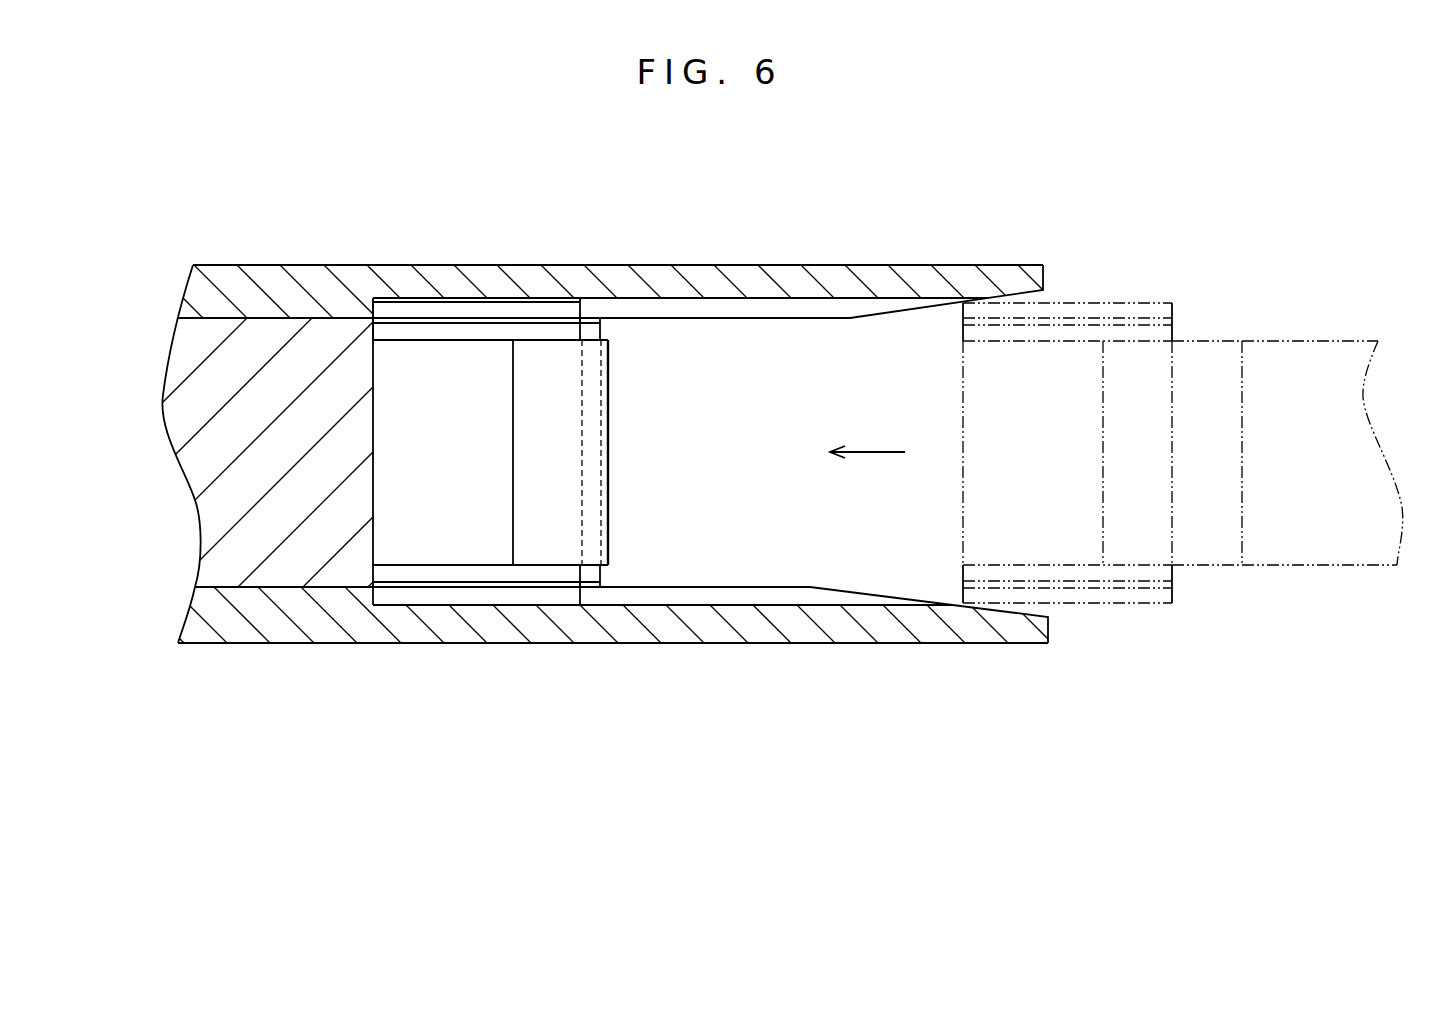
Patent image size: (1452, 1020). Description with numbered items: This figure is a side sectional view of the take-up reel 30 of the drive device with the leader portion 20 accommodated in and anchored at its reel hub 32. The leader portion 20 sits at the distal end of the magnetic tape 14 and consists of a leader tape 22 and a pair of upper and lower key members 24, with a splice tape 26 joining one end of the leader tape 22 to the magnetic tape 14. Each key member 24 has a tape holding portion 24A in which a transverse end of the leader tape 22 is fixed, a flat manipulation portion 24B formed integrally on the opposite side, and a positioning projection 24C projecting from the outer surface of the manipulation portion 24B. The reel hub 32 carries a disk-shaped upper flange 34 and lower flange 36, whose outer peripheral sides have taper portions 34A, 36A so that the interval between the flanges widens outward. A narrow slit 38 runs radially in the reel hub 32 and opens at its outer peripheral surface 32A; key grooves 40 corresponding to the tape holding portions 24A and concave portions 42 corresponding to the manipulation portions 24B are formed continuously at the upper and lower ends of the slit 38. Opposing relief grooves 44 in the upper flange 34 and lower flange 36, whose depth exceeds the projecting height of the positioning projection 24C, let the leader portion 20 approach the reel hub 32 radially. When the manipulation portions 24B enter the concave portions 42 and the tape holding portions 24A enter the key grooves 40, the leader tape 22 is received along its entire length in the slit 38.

The magnetic tape 14 is at (602, 482).
The leader portion 20 is at (370, 505).
The leader tape 22 is at (500, 418).
The key members 24 is at (814, 453).
The tape holding portion 24A is at (424, 214).
The manipulation portion 24B is at (480, 320).
The positioning projection 24C is at (427, 310).
The splice tape 26 is at (570, 440).
The take-up reel 30 is at (800, 172).
The reel hub 32 is at (262, 332).
The outer peripheral surface 32A is at (608, 512).
The upper flange 34 is at (728, 279).
The taper portion 34A is at (1032, 297).
The lower flange 36 is at (816, 630).
The taper portion 36A is at (933, 594).
The slit 38 is at (376, 360).
The key grooves 40 is at (412, 336).
The concave portions 42 is at (444, 318).
The relief grooves 44 is at (590, 314).